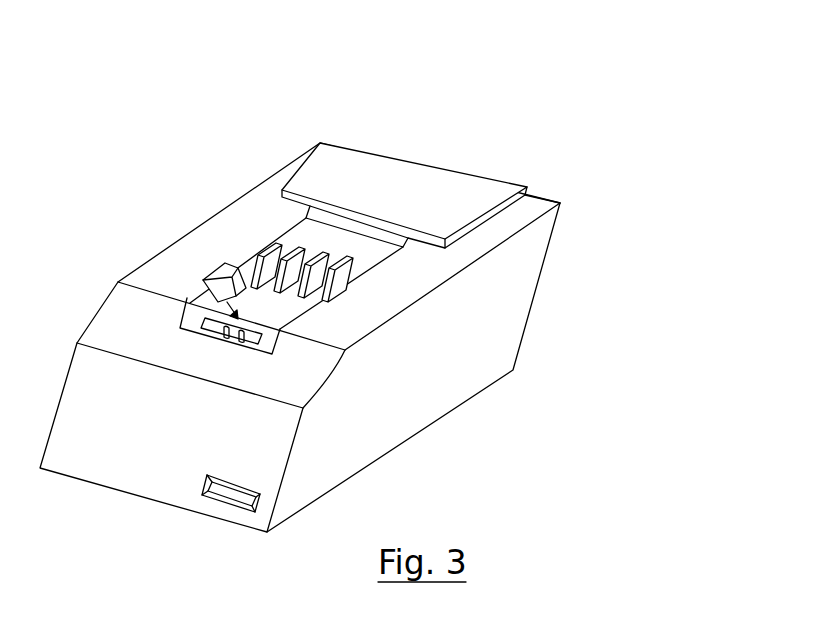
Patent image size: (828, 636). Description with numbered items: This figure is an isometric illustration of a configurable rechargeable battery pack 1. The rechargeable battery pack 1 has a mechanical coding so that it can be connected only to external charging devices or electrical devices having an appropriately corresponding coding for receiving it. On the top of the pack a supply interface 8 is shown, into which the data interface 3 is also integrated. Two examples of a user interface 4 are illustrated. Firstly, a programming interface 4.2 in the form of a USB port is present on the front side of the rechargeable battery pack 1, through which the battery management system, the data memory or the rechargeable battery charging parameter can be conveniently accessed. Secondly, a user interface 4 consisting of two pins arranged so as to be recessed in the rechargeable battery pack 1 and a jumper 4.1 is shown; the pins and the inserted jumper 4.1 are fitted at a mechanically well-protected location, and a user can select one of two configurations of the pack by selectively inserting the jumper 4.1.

The rechargeable battery pack 1 is at (600, 169).
The data interface 3 is at (348, 249).
The supply interface 8 is at (319, 239).
The user interface 4 is at (208, 345).
The jumper 4.1 is at (218, 264).
The programming interface 4.2 is at (233, 500).